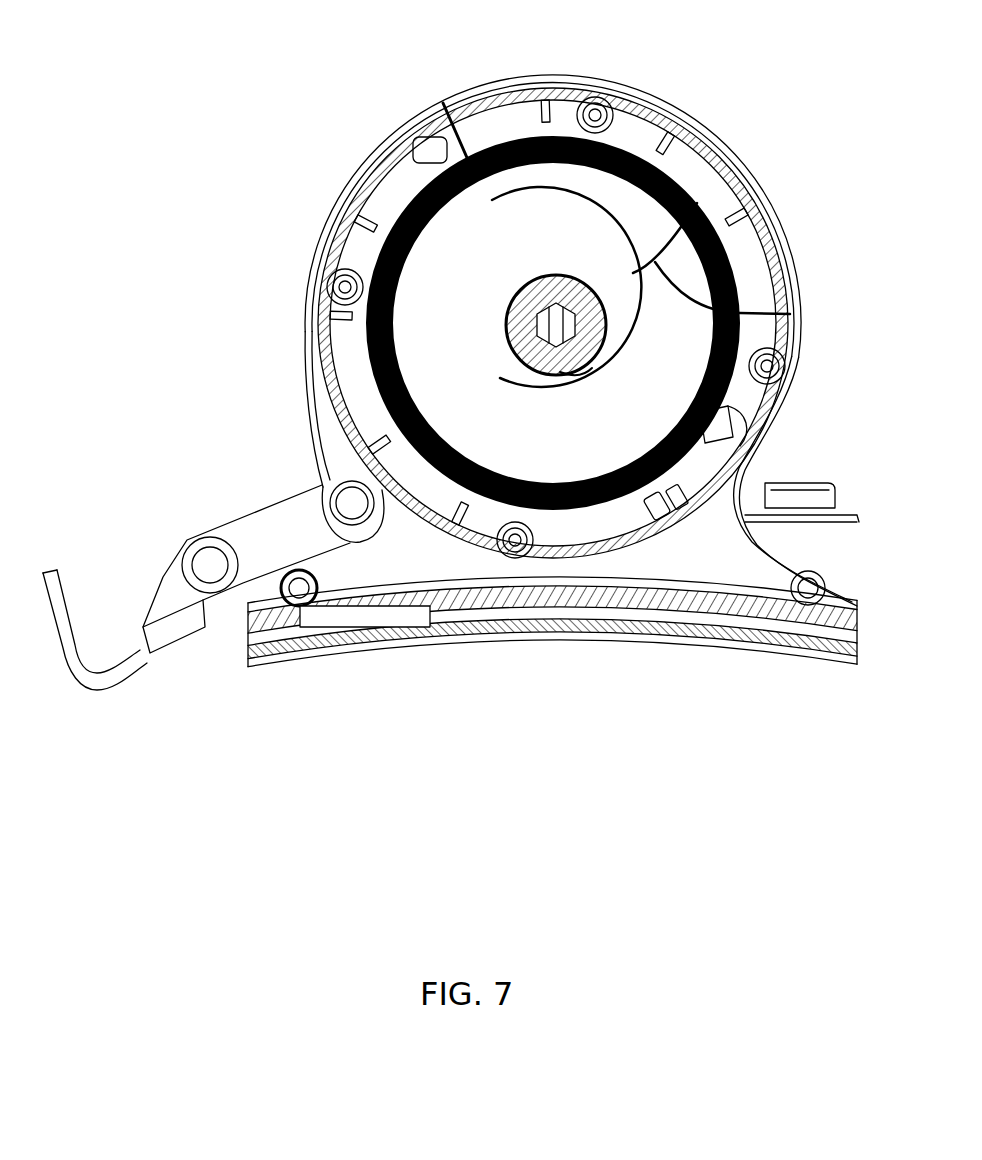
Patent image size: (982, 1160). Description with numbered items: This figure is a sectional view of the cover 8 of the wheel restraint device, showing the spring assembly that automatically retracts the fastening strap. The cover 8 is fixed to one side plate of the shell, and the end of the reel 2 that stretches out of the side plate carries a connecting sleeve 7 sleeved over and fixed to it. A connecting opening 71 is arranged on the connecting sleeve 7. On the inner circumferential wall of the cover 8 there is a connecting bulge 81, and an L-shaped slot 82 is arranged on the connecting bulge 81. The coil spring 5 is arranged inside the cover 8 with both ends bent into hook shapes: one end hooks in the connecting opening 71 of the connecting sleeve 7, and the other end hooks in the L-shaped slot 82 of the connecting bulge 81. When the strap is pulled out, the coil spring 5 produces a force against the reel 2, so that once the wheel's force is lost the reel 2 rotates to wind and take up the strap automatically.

The reel 2 is at (528, 315).
The coil spring 5 is at (690, 235).
The connecting sleeve 7 is at (522, 357).
The connecting opening 71 is at (567, 378).
The cover 8 is at (778, 275).
The connecting bulge 81 is at (657, 512).
The L-shaped slot 82 is at (677, 512).